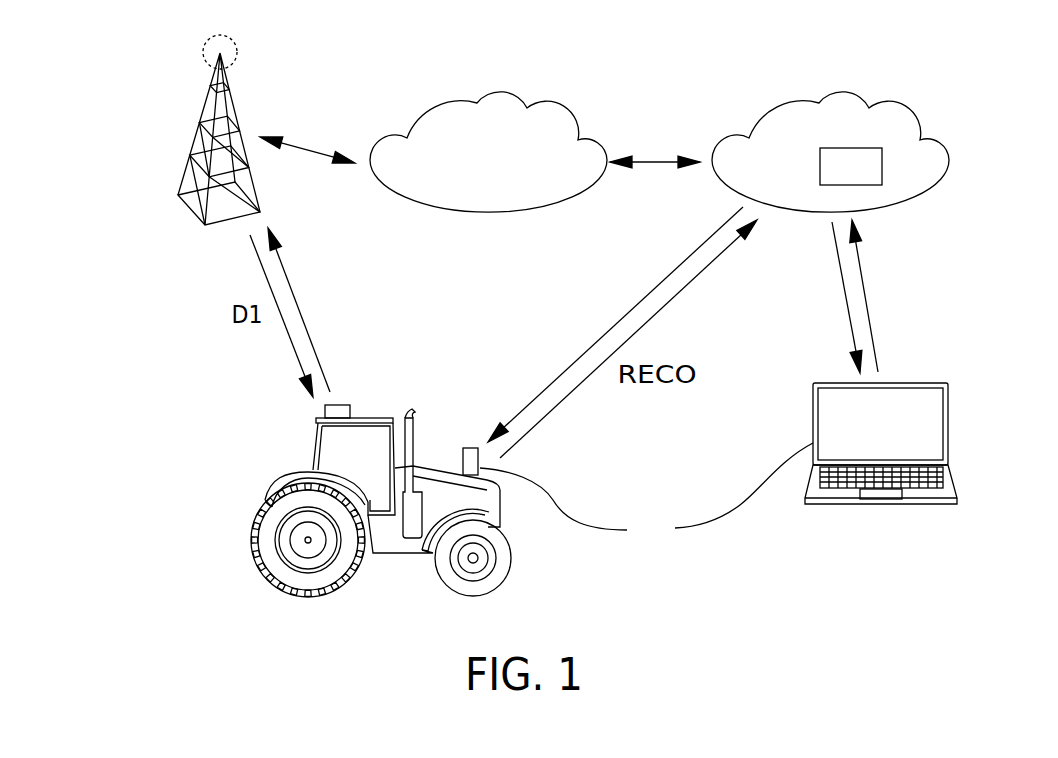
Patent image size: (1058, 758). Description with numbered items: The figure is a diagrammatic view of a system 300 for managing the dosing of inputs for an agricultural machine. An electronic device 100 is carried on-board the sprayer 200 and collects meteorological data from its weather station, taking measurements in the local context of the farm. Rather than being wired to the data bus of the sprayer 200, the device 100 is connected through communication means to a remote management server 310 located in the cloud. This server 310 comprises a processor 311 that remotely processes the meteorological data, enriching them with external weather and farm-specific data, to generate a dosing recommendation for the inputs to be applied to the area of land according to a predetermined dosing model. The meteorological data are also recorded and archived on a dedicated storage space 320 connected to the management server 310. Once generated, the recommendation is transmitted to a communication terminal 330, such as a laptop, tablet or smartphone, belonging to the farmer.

The agricultural work system 300 is at (114, 82).
The electronic device 100 is at (323, 412).
The sprayer 200 is at (316, 443).
The remote management server 310 is at (787, 105).
The processor 311 is at (865, 185).
The dedicated storage space 320 is at (537, 108).
The communication terminal 330 is at (646, 494).